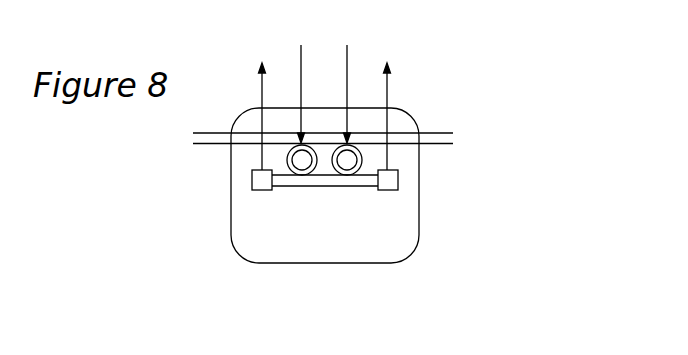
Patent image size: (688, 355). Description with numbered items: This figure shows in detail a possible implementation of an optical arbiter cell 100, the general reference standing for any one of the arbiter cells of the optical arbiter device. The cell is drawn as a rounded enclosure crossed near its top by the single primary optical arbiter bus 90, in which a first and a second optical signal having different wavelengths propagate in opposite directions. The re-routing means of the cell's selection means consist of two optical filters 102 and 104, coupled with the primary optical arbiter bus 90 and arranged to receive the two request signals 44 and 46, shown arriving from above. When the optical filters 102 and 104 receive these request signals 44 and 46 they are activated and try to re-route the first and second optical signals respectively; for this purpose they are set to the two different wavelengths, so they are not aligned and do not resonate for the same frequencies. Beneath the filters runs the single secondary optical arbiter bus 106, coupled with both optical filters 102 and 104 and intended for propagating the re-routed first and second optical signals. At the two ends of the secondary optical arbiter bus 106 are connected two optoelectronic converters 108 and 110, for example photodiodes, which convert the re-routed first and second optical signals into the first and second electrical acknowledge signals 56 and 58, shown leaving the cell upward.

The optical arbiter cell 100 is at (348, 263).
The single primary optical arbiter bus 90 is at (453, 142).
The optical filter 102 is at (292, 172).
The optical filter 104 is at (357, 172).
The single secondary optical arbiter bus 106 is at (332, 186).
The optoelectronic converter 108 is at (252, 183).
The optoelectronic converter 110 is at (398, 180).
The first electrical acknowledge signal 56 is at (261, 103).
The second electrical acknowledge signal 58 is at (396, 103).
The request signal 44 is at (302, 79).
The request signal 46 is at (347, 79).